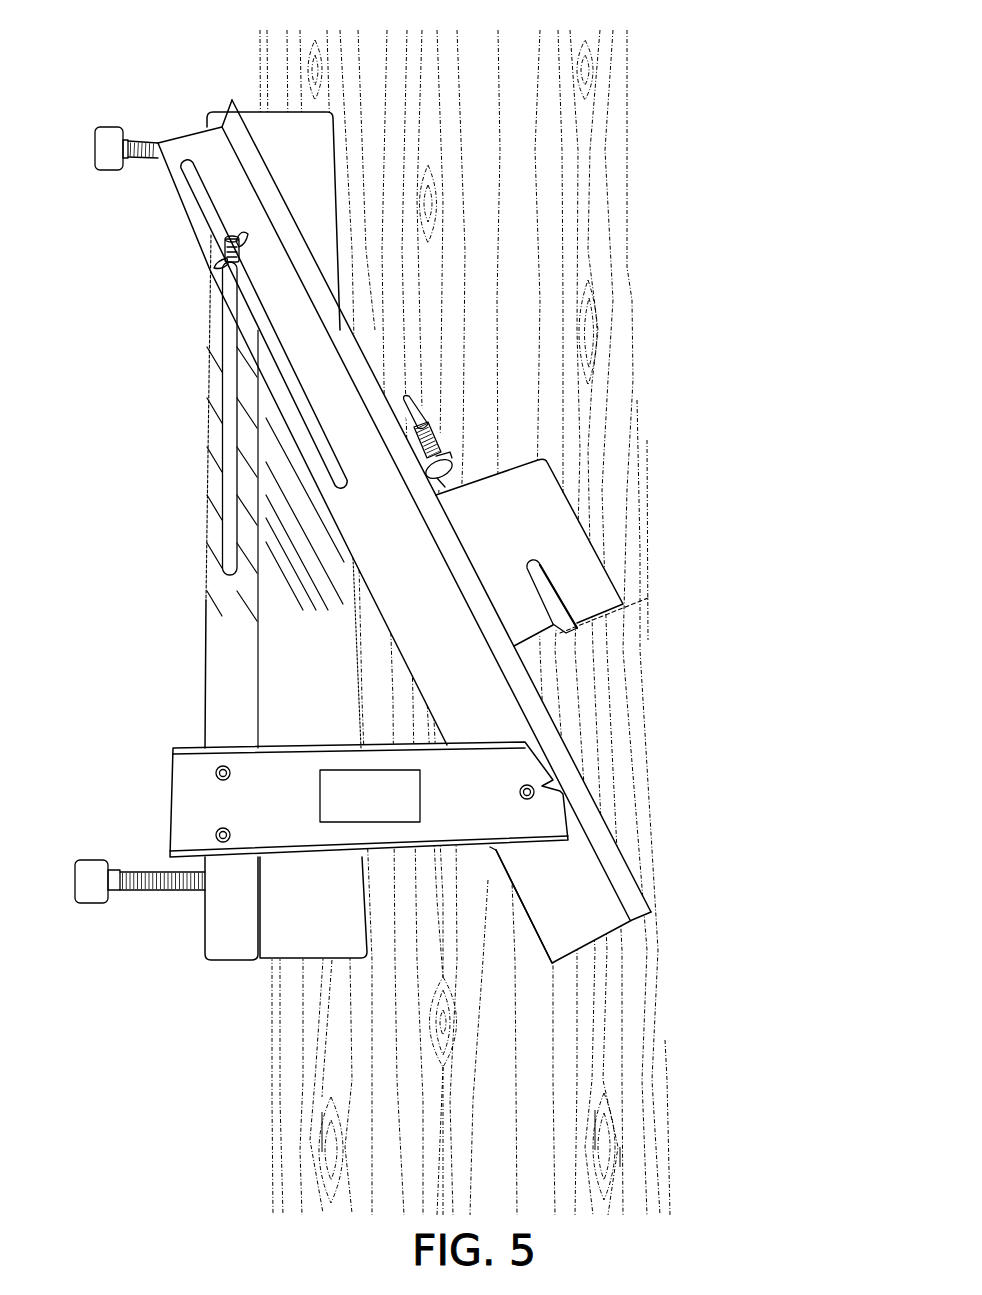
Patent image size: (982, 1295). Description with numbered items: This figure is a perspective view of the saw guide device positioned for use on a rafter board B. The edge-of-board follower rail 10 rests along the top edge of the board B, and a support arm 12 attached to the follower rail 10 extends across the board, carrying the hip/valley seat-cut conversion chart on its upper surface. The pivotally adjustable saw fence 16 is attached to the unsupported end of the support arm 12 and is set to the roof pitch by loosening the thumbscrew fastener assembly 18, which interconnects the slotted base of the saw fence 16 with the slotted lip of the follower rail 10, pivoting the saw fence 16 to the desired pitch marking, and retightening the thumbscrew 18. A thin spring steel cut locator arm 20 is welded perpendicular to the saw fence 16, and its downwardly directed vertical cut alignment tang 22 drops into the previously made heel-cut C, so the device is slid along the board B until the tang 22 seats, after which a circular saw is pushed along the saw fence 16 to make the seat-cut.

The edge-of-board follower rail 10 is at (277, 135).
The support arm 12 is at (188, 782).
The pivotally adjustable saw fence 16 is at (607, 903).
The thumbscrew fastener assembly 18 is at (223, 249).
The horizontal cut locator arm 20 is at (567, 545).
The vertical cut alignment tang 22 is at (612, 610).
The board B is at (612, 325).
The heel-cut C is at (637, 603).